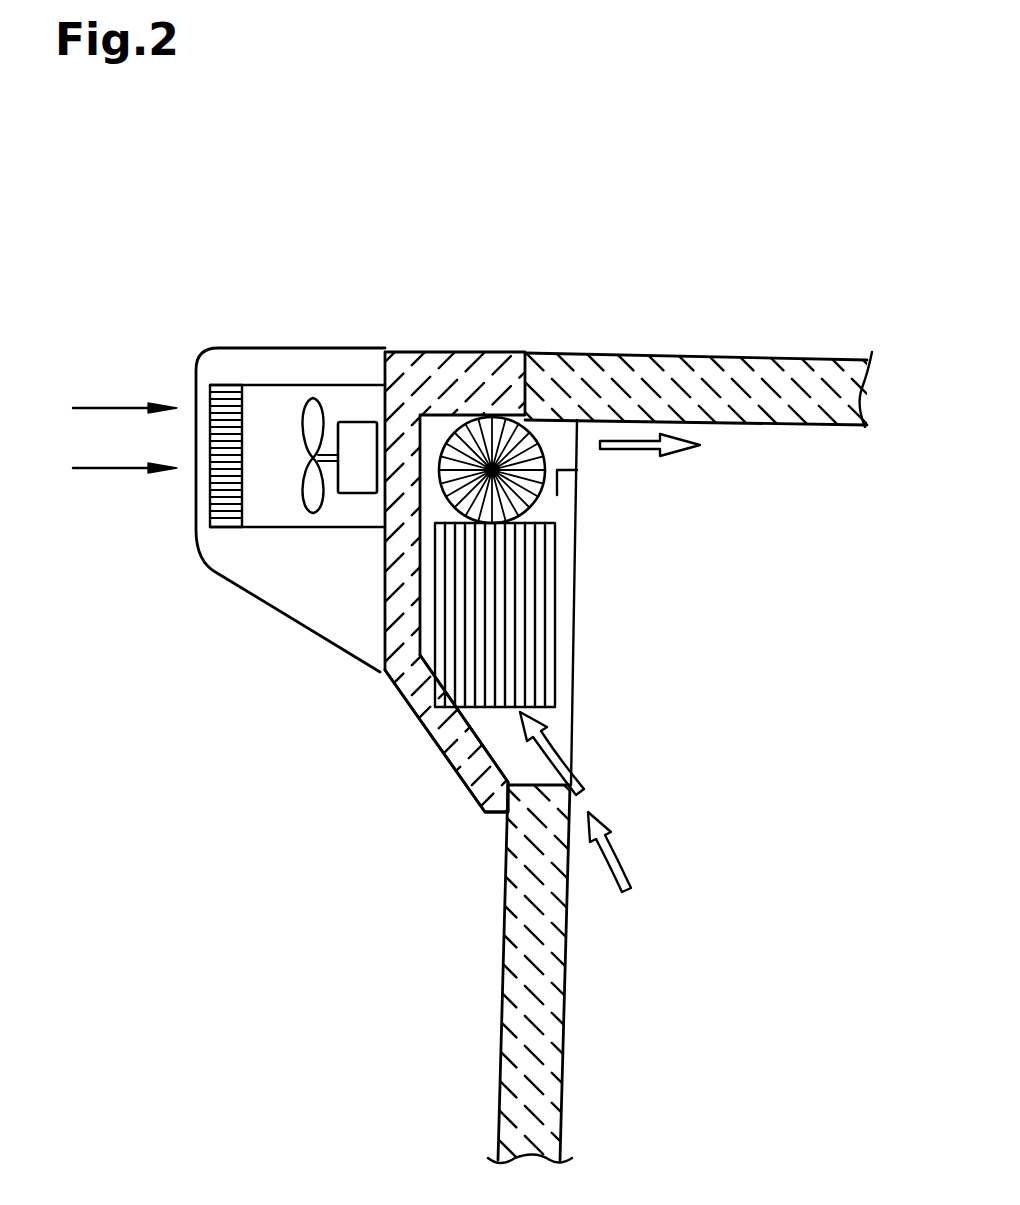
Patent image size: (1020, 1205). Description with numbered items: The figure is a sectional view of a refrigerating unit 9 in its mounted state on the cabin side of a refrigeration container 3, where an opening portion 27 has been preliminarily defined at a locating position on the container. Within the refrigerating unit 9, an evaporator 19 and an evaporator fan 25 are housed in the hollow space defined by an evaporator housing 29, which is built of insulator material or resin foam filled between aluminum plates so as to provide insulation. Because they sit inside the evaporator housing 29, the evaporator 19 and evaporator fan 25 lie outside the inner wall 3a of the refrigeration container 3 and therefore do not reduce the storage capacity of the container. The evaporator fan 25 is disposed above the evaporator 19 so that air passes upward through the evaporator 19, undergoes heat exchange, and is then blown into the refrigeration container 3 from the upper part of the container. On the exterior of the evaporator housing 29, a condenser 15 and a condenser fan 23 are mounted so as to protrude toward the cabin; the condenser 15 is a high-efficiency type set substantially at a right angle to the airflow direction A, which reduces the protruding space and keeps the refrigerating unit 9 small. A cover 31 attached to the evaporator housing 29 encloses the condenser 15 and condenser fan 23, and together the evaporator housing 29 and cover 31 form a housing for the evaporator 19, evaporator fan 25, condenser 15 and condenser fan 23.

The refrigeration container 3 is at (777, 373).
The inner wall 3a is at (578, 488).
The refrigerating unit 9 is at (478, 345).
The condenser 15 is at (205, 372).
The evaporator 19 is at (528, 673).
The condenser fan 23 is at (362, 422).
The evaporator fan 25 is at (552, 498).
The opening portion 27 is at (575, 757).
The evaporator housing 29 is at (440, 748).
The cover 31 is at (250, 348).
The airflow direction A is at (115, 468).